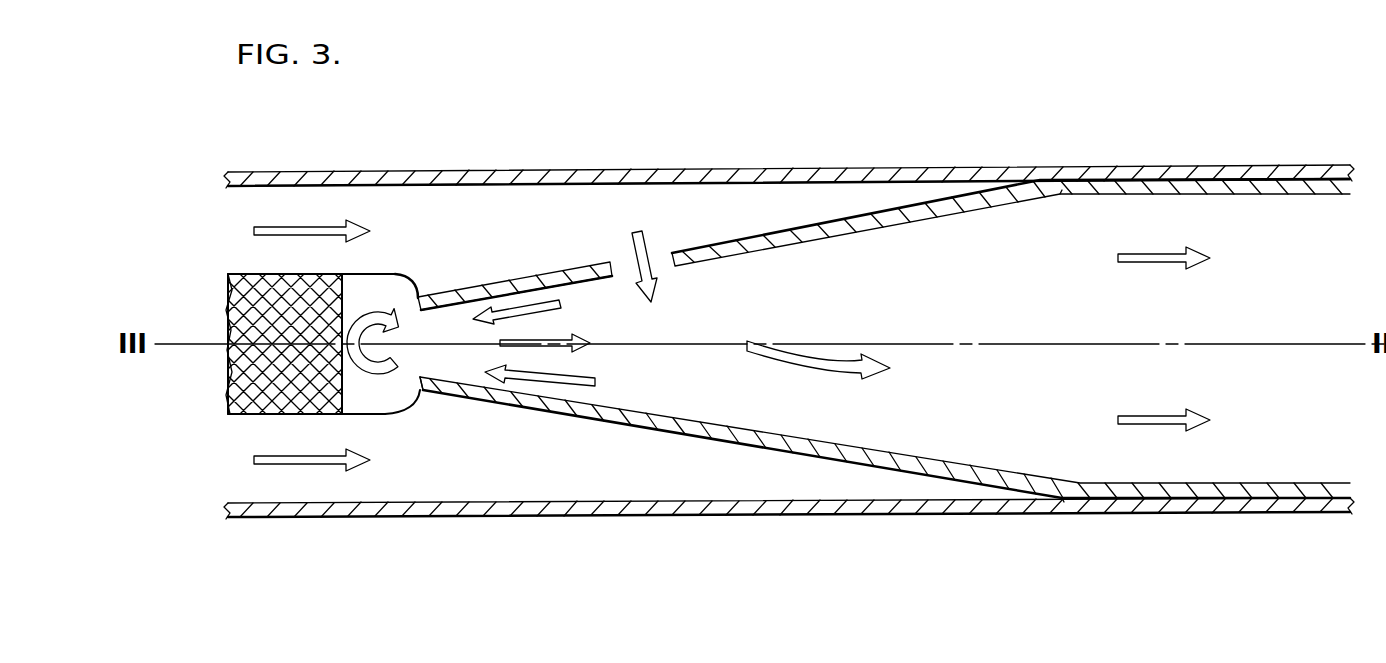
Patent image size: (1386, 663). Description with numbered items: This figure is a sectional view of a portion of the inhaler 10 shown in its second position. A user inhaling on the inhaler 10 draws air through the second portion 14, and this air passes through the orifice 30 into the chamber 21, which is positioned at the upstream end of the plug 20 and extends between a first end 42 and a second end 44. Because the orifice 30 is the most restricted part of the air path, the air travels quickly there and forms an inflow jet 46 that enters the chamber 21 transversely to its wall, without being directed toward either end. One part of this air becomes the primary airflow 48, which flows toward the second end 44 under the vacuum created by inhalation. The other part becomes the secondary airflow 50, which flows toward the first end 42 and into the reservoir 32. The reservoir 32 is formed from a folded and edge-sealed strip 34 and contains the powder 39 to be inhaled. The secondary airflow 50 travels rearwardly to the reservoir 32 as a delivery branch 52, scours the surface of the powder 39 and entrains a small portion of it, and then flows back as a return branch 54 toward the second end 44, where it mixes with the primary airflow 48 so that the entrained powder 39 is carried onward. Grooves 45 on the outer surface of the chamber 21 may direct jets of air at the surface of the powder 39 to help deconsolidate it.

The inhaler 10 is at (912, 145).
The second portion 14 is at (515, 170).
The plug 20 is at (1262, 514).
The chamber 21 is at (757, 433).
The orifice 30 is at (665, 262).
The reservoir 32 is at (373, 412).
The strip 34 is at (404, 410).
The powder 39 is at (238, 414).
The first end 42 is at (400, 277).
The second end 44 is at (1076, 497).
The grooves 45 is at (434, 392).
The inflow jet 46 is at (634, 248).
The primary airflow 48 is at (858, 378).
The secondary airflow 50 is at (367, 312).
The delivery branch 52 is at (556, 296).
The return branch 54 is at (494, 343).